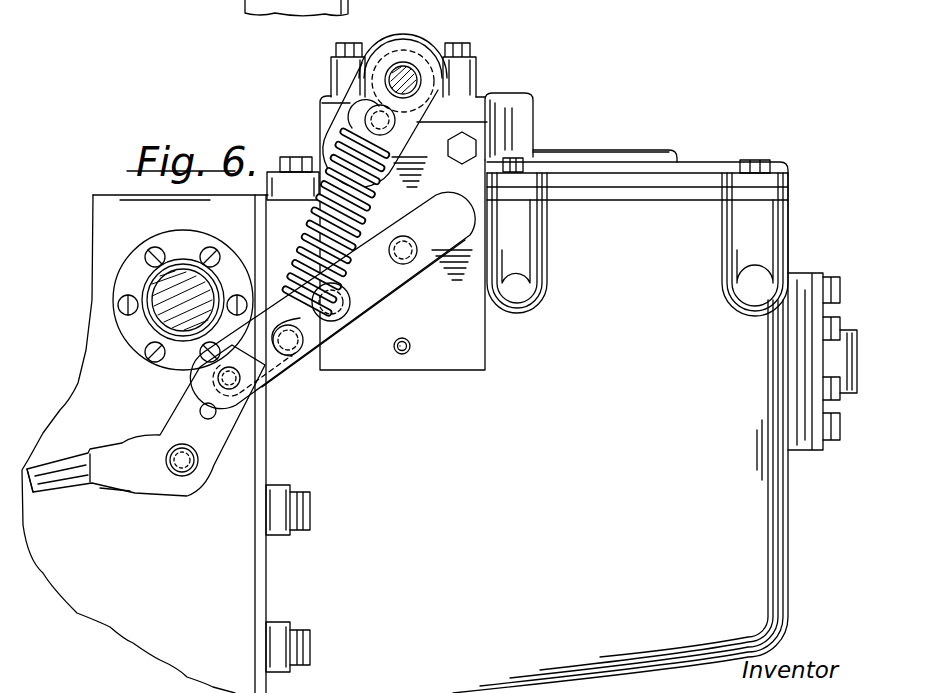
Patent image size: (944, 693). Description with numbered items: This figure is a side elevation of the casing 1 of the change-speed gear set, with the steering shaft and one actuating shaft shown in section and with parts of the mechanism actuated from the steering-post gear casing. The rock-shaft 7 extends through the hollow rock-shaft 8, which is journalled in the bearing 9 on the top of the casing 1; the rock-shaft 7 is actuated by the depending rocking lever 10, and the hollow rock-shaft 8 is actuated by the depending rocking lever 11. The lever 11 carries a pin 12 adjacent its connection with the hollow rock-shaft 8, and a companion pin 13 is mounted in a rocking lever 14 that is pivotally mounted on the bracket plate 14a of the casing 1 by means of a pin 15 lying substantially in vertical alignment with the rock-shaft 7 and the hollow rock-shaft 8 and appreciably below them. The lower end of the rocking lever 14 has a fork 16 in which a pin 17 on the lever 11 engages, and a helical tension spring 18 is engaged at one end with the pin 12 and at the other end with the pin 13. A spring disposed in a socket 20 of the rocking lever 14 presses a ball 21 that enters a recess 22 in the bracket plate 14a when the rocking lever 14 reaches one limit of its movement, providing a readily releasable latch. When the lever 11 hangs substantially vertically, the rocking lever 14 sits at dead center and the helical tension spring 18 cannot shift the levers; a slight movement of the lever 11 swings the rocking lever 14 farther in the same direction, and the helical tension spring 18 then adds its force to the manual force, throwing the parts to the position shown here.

The casing 1 is at (521, 208).
The rock-shaft 7 is at (401, 70).
The hollow rock-shaft 8 is at (390, 67).
The bearing 9 is at (420, 47).
The depending rocking lever 10 is at (183, 300).
The depending rocking lever 11 is at (377, 93).
The pin 12 is at (365, 114).
The companion pin 13 is at (292, 356).
The rocking lever 14 is at (405, 296).
The bracket plate 14a is at (484, 372).
The pin 15 is at (404, 251).
The fork 16 is at (265, 386).
The pin 17 is at (217, 381).
The helical tension spring 18 is at (335, 228).
The socket 20 is at (342, 296).
The ball 21 is at (373, 350).
The recess 22 is at (402, 355).